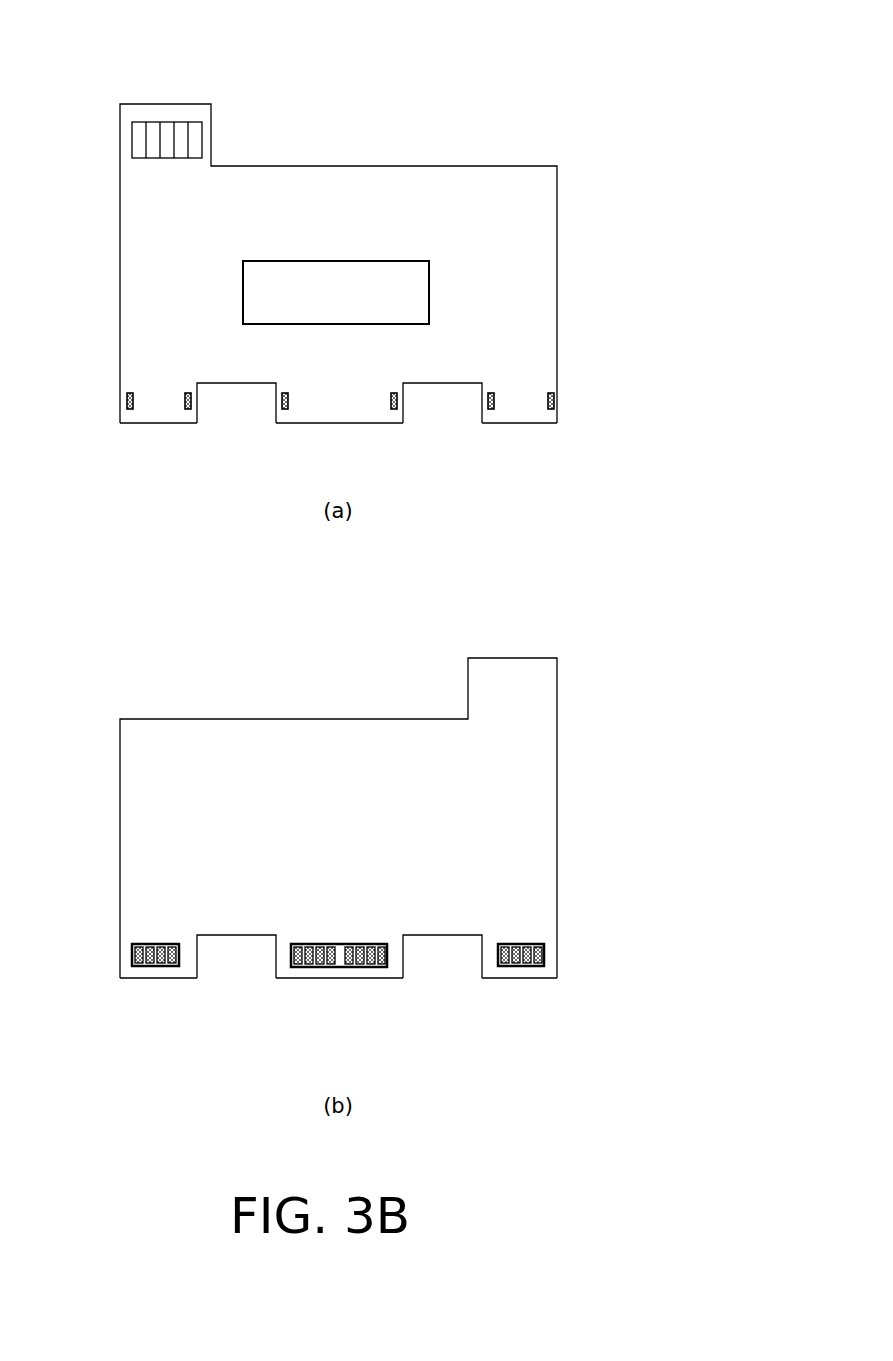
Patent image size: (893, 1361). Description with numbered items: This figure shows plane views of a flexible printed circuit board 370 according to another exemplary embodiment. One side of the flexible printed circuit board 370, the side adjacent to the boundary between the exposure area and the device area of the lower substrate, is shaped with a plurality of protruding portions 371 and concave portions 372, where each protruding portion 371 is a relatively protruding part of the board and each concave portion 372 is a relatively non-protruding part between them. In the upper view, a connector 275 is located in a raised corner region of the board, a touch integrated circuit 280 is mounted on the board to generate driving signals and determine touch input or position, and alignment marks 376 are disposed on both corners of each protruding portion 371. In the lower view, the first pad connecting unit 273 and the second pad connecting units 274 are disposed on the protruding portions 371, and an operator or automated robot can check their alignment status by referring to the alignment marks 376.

The flexible printed circuit board 370 is at (151, 103).
The connector 275 is at (132, 137).
The touch integrated circuit 280 is at (356, 261).
The alignment mark 376 is at (126, 400).
The protruding portions 371 is at (160, 412).
The concave portions 372 is at (227, 410).
The second pad connecting unit 274 is at (162, 968).
The first pad connecting unit 273 is at (377, 968).